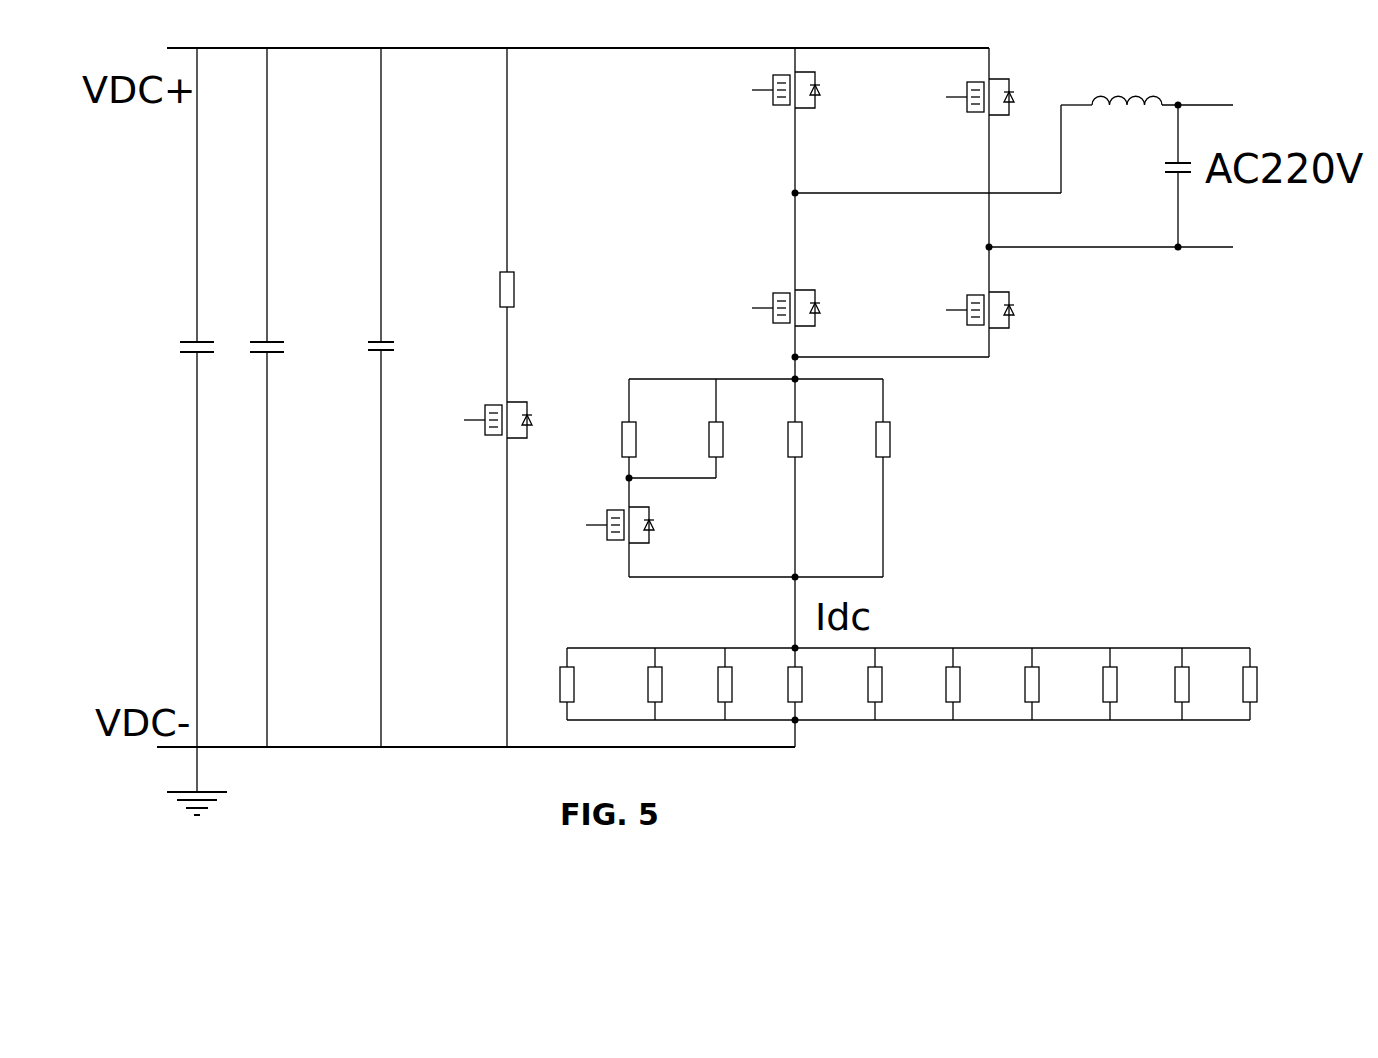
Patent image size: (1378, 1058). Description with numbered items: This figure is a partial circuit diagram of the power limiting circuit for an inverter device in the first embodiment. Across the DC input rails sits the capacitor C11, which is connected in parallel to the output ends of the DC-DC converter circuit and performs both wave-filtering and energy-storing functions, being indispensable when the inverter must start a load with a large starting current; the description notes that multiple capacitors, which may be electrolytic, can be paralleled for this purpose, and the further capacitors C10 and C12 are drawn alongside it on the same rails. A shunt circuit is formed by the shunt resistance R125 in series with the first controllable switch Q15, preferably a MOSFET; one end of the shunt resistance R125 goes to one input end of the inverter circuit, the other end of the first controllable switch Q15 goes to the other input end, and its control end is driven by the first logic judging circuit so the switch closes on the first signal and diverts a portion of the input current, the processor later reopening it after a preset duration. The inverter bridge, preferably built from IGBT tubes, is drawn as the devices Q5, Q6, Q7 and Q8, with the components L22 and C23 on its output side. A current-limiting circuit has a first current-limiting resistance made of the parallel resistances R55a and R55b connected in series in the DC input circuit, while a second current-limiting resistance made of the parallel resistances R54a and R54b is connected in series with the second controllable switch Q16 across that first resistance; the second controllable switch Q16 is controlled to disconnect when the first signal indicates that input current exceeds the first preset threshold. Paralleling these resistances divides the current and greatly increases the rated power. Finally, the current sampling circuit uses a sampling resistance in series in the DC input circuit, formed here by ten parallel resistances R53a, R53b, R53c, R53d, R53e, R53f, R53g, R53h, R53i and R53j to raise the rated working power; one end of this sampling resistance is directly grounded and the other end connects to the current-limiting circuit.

The electrolytic capacitor 3900uF/500V C10 is at (210, 397).
The capacitor C11 is at (280, 397).
The capacitor 4.7u C12 is at (395, 397).
The shunt resistance R125 is at (531, 225).
The first controllable switch Q15 is at (501, 574).
The transistor FGH75T65U Q5 is at (795, 120).
The transistor FGH75T65U Q6 is at (959, 147).
The transistor FGH75T65U Q7 is at (795, 334).
The transistor FGH75T65U Q8 is at (959, 324).
The inductor 1.2mH L22 is at (1147, 122).
The capacitor 2.2u C23 is at (1157, 176).
The resistance R54a is at (650, 428).
The resistance R54b is at (737, 428).
The resistance R55a is at (820, 478).
The resistance R55b is at (908, 478).
The second controllable switch Q16 is at (638, 527).
The resistance R53a is at (593, 684).
The resistance R53b is at (681, 684).
The resistance R53c is at (751, 684).
The resistance R53d is at (821, 684).
The resistance R53e is at (901, 684).
The resistance R53f is at (979, 684).
The resistance R53g is at (1058, 684).
The resistance R53h is at (1136, 684).
The resistance R53i is at (1208, 684).
The resistance R53j is at (1276, 684).